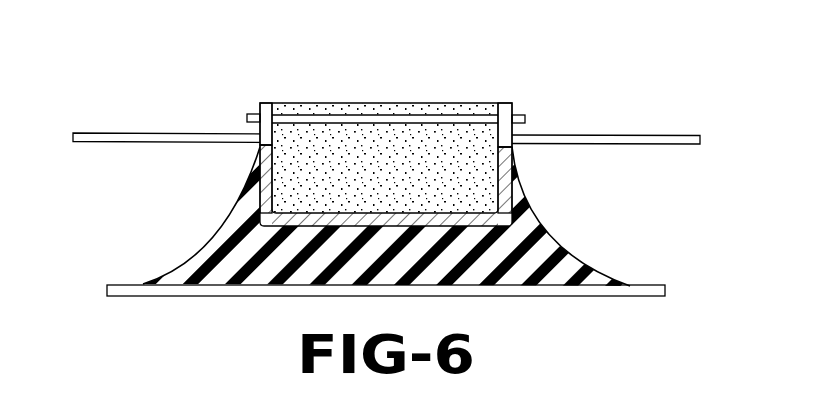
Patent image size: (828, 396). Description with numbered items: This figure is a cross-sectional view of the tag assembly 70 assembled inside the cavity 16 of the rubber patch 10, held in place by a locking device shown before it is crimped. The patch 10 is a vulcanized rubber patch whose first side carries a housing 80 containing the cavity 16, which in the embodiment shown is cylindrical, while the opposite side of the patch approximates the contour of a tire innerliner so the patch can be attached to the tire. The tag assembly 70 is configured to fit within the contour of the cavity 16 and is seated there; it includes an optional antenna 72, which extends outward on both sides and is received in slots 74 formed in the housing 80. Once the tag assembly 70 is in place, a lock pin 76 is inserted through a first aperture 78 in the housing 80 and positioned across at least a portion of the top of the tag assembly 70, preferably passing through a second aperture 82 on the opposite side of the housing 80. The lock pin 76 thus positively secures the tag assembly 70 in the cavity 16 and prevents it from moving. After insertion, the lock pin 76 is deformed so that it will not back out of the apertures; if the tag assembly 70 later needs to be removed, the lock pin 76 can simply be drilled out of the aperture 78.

The rubber patch 10 is at (148, 269).
The cavity 16 is at (274, 173).
The tag assembly 70 is at (368, 100).
The antenna 72 is at (623, 136).
The slots 74 is at (263, 142).
The lock pin 76 is at (432, 118).
The first aperture 78 is at (274, 104).
The housing 80 is at (267, 103).
The second aperture 82 is at (512, 112).